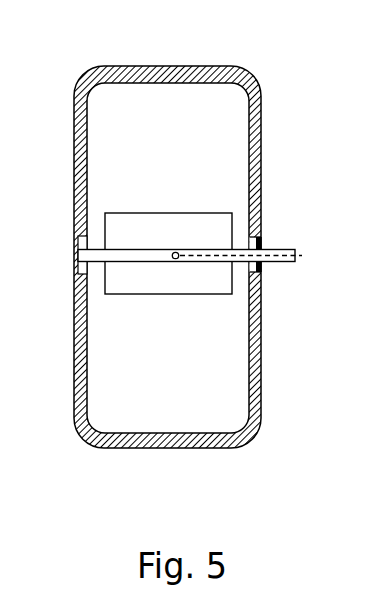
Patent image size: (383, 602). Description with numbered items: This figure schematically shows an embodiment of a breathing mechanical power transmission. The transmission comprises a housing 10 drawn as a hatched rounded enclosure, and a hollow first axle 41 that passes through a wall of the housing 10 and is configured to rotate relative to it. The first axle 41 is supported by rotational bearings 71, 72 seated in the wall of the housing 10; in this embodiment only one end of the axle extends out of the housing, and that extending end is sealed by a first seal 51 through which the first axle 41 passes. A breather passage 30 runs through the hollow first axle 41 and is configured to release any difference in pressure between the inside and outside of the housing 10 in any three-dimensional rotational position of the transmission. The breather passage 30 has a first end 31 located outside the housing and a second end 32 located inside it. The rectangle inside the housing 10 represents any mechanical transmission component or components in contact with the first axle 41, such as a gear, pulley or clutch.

The housing 10 is at (160, 66).
The breather passage 30 is at (217, 269).
The first end 31 is at (186, 256).
The second end 32 is at (177, 250).
The first axle 41 is at (102, 249).
The first seal 51 is at (259, 241).
The rotational bearing 71 is at (261, 237).
The rotational bearing 72 is at (78, 273).